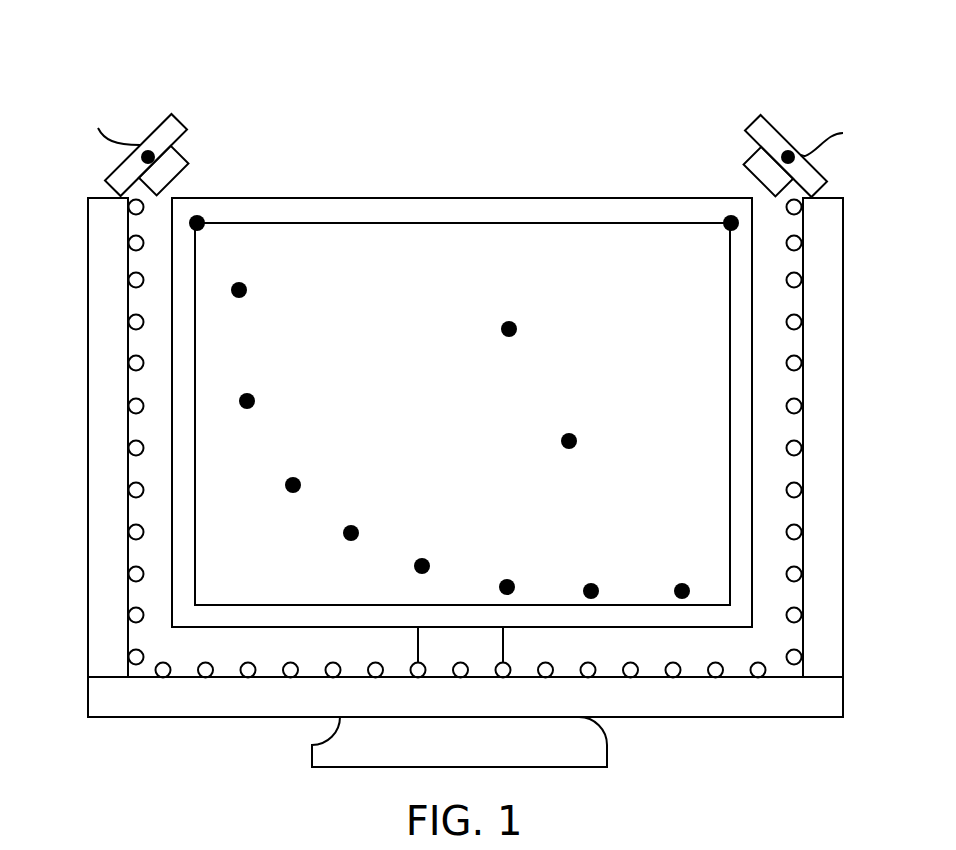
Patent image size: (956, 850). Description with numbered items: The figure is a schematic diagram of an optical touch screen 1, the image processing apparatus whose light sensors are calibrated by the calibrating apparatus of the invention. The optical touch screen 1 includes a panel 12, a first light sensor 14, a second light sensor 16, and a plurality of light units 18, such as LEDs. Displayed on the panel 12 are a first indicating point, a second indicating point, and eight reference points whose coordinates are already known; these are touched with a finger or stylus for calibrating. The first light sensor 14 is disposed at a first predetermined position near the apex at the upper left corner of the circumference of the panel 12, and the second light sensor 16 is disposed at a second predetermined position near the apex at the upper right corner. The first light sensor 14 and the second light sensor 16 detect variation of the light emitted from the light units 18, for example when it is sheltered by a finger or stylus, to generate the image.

The optical touch screen 1 is at (497, 110).
The panel 12 is at (623, 222).
The first light sensor 14 is at (186, 116).
The second light sensor 16 is at (772, 116).
The light unit 18 is at (128, 258).